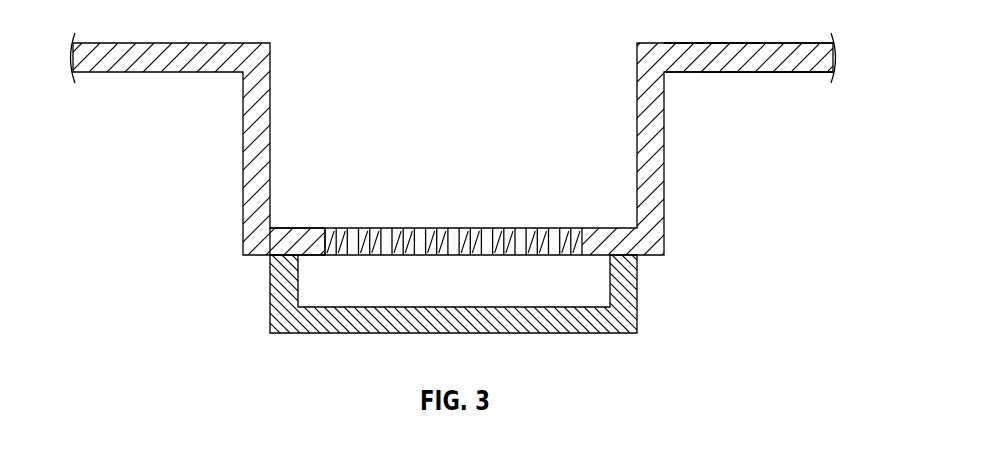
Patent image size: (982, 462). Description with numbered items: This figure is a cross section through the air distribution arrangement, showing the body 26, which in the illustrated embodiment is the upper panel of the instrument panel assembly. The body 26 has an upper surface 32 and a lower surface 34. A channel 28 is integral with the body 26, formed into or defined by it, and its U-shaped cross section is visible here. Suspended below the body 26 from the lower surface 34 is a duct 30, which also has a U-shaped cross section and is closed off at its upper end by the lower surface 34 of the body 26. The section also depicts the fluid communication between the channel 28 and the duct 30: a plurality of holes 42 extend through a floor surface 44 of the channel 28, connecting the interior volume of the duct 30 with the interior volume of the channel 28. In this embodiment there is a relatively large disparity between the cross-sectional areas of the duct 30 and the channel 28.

The body 26 is at (755, 50).
The channel 28 is at (300, 65).
The duct 30 is at (590, 334).
The upper surface 32 is at (677, 43).
The lower surface 34 is at (768, 73).
The holes 42 is at (354, 232).
The floor surface 44 is at (304, 230).